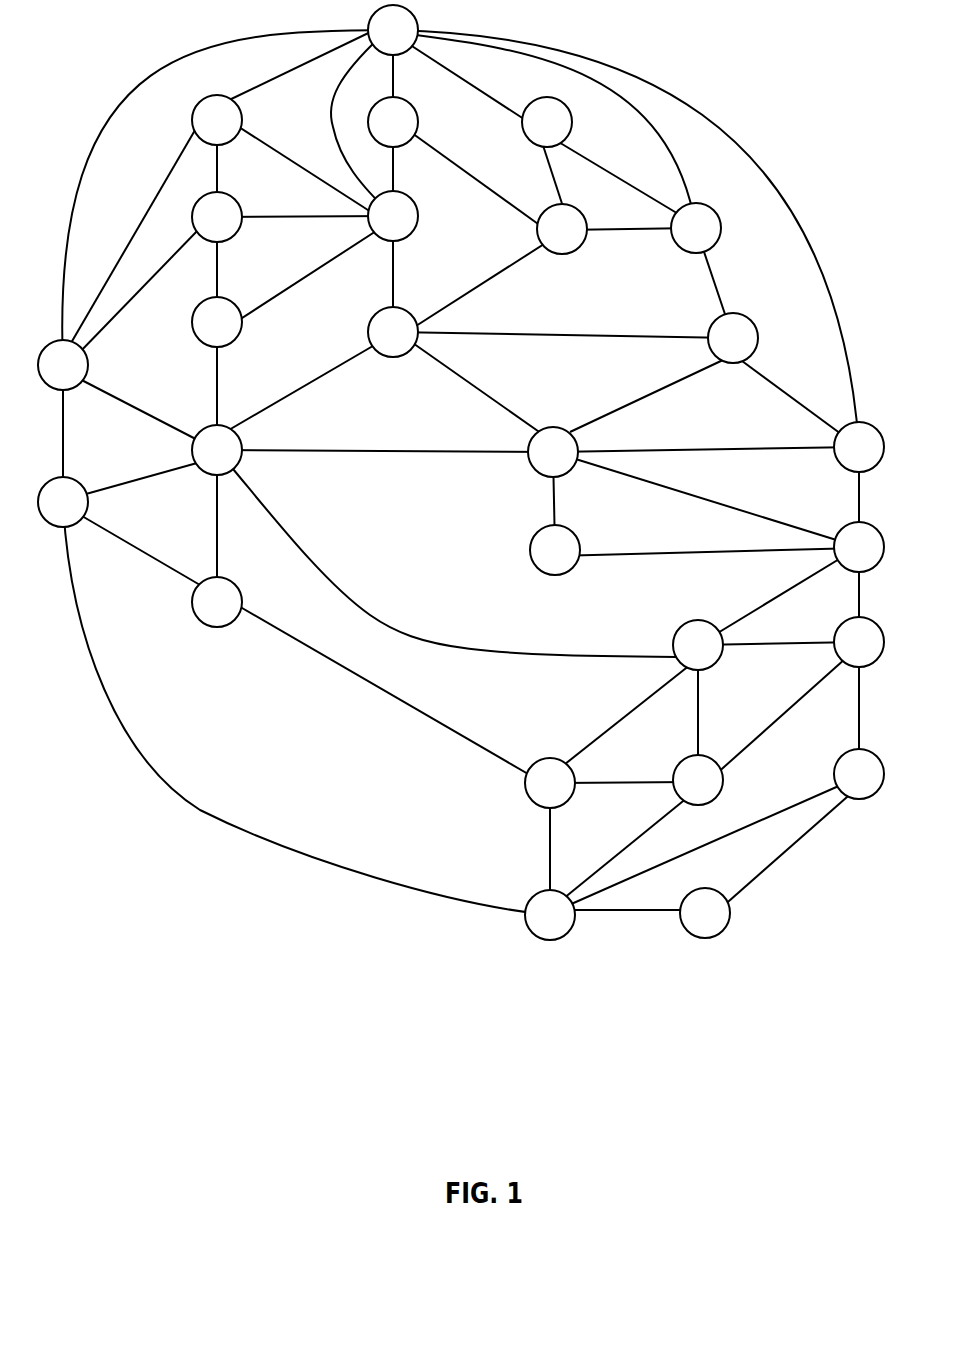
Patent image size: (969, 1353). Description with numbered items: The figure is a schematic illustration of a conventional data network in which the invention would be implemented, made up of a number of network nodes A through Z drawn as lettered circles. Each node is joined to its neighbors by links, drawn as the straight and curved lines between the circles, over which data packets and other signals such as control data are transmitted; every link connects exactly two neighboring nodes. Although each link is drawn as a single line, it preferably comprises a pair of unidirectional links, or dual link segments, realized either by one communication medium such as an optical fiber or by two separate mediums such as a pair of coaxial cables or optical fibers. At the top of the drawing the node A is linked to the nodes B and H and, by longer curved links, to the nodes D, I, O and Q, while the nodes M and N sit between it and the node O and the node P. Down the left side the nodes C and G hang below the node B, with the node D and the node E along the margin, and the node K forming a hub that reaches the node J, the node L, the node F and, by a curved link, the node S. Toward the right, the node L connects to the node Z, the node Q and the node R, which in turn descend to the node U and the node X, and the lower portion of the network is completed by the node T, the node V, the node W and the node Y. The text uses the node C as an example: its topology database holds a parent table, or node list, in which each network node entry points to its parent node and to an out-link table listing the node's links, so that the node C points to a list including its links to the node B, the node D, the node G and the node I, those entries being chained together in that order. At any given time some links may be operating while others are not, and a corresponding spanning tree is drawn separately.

The network node A is at (393, 30).
The network node B is at (217, 120).
The network node C is at (217, 217).
The network node D is at (63, 365).
The network node E is at (63, 502).
The network node F is at (217, 602).
The network node G is at (217, 322).
The network node H is at (393, 122).
The network node I is at (393, 216).
The network node J is at (393, 332).
The network node K is at (217, 450).
The network node L is at (553, 452).
The network node M is at (547, 122).
The network node N is at (562, 229).
The network node O is at (696, 228).
The network node P is at (733, 338).
The network node Q is at (859, 447).
The network node R is at (859, 547).
The network node S is at (698, 645).
The network node T is at (550, 783).
The network node U is at (859, 642).
The network node V is at (698, 780).
The network node W is at (550, 915).
The network node X is at (859, 774).
The network node Y is at (705, 913).
The network node Z is at (555, 550).